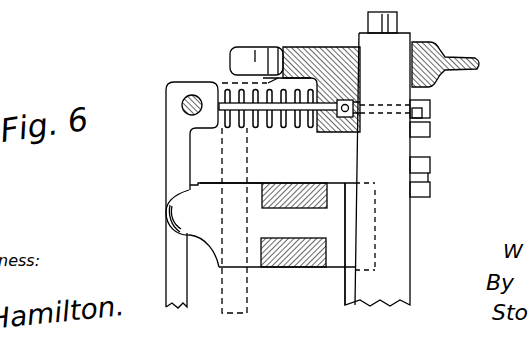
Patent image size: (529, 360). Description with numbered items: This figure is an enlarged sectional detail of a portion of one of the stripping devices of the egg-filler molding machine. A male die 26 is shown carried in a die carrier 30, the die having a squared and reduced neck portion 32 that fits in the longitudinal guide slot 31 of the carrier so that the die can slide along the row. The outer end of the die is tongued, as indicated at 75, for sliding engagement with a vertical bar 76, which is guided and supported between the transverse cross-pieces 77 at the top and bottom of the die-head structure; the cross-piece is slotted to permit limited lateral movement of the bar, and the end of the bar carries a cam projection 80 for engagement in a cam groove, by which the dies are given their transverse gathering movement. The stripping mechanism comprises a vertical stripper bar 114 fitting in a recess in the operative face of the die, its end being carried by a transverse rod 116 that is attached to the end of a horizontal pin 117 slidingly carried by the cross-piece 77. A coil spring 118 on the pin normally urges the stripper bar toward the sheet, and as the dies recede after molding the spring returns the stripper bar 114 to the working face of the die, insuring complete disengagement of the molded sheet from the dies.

The male die 26 is at (164, 214).
The die carrier 30 is at (325, 268).
The longitudinal guide slot 31 is at (323, 183).
The squared and reduced neck portion 32 is at (300, 236).
The tongue 75 is at (353, 274).
The vertical bar 76 is at (402, 243).
The cross-piece 77 is at (452, 53).
The cam projection 80 is at (391, 20).
The stripper bar 114 is at (166, 268).
The transverse rod 116 is at (190, 95).
The horizontal pin 117 is at (356, 112).
The coil spring 118 is at (286, 130).